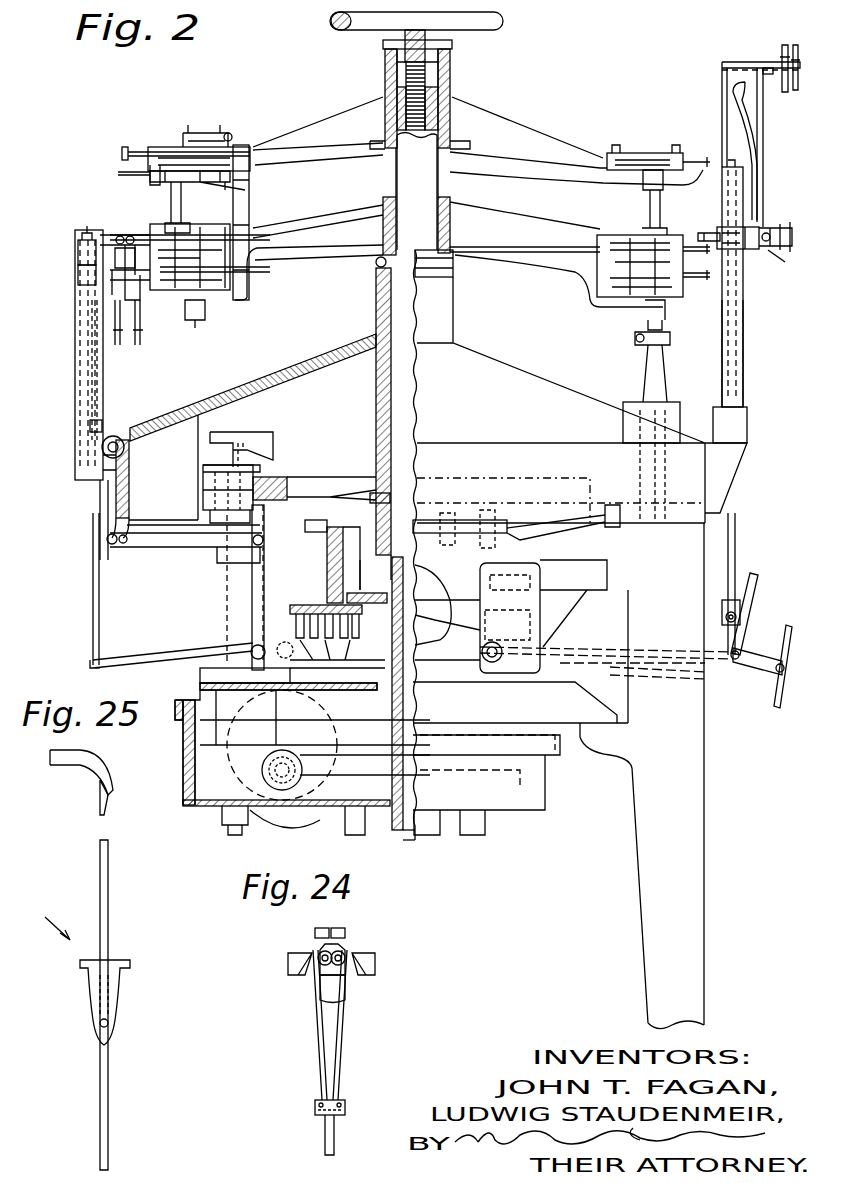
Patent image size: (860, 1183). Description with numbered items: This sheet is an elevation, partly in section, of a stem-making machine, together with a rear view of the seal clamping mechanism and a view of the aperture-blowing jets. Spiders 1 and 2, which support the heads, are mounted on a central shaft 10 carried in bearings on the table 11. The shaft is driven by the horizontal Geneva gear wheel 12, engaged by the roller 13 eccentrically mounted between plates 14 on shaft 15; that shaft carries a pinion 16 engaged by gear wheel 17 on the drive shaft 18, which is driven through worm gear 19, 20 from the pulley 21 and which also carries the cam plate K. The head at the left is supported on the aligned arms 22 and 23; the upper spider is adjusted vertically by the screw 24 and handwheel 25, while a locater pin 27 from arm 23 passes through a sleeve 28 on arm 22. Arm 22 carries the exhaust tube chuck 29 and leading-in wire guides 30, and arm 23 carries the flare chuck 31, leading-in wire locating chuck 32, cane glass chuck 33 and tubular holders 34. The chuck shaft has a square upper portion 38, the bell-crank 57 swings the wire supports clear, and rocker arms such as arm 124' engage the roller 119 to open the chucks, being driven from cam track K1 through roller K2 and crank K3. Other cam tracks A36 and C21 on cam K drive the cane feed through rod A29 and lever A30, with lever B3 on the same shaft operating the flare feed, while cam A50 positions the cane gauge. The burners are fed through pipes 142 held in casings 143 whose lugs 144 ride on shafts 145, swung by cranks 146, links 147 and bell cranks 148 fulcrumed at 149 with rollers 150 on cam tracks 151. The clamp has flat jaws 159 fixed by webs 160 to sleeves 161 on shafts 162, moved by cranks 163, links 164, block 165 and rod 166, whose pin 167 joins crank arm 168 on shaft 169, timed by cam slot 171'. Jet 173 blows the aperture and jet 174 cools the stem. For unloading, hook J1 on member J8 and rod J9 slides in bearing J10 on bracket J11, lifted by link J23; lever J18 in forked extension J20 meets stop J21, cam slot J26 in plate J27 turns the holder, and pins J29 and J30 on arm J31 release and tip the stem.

In FIG. 2, the upper spider 1 is at (447, 113).
In FIG. 2, the lower spider 2 is at (452, 207).
In FIG. 2, the central shaft 10 is at (400, 176).
In FIG. 2, the table 11 is at (333, 354).
In FIG. 2, the gear wheel 12 is at (300, 481).
In FIG. 2, the roller 13 is at (203, 487).
In FIG. 2, the plates 14 is at (262, 482).
In FIG. 2, the shaft 15 is at (232, 594).
In FIG. 2, the pinion 16 is at (266, 740).
In FIG. 2, the gear wheel 17 is at (335, 726).
In FIG. 2, the drive shaft 18 is at (406, 832).
In FIG. 2, the worm gear 19 is at (358, 771).
In FIG. 2, the worm gear 20 is at (262, 775).
In FIG. 2, the pulley 21 is at (306, 812).
In FIG. 2, the upper arm 22 is at (316, 130).
In FIG. 2, the lower arm 23 is at (328, 217).
In FIG. 2, the screw 24 is at (405, 78).
In FIG. 2, the handwheel 25 is at (352, 32).
In FIG. 2, the locater pin 27 is at (250, 202).
In FIG. 2, the sleeve 28 is at (250, 148).
In FIG. 2, the exhaust tube chuck 29 is at (124, 146).
In FIG. 2, the leading-in wire guides 30 is at (118, 173).
In FIG. 2, the flare chuck 31 is at (136, 235).
In FIG. 2, the leading-in wire locating chuck 32 is at (125, 237).
In FIG. 2, the cane glass chuck 33 is at (118, 273).
In FIG. 2, the tubular holders 34 is at (135, 345).
In FIG. 2, the upper portion of shaft 38 is at (184, 203).
In FIG. 2, the bell-crank 57 is at (203, 140).
In FIG. 2, the roller 119 is at (203, 318).
In FIG. 2, the rocker arm 124' is at (653, 355).
In FIG. 2, the vertical pipe 142 is at (78, 252).
In FIG. 2, the casing 143 is at (75, 340).
In FIG. 2, the lug 144 is at (118, 438).
In FIG. 2, the shaft 145 is at (125, 445).
In FIG. 2, the crank 146 is at (105, 500).
In FIG. 2, the link 147 is at (163, 548).
In FIG. 2, the bell crank 148 is at (270, 592).
In FIG. 2, the fulcrum 149 is at (250, 646).
In FIG. 2, the roller 150 is at (425, 628).
In FIG. 2, the cam tracks 151 is at (322, 660).
In FIG. 2, the flat jaws 159 is at (121, 235).
In FIG. 24, the flat jaws 159 is at (327, 930).
In FIG. 2, the web 160 is at (118, 266).
In FIG. 24, the web 160 is at (345, 945).
In FIG. 2, the sleeve 161 is at (78, 272).
In FIG. 24, the shaft 162 is at (348, 956).
In FIG. 24, the cranks 163 is at (318, 950).
In FIG. 2, the links 164 is at (97, 395).
In FIG. 24, the links 164 is at (318, 1026).
In FIG. 2, the block 165 is at (101, 422).
In FIG. 24, the block 165 is at (345, 1104).
In FIG. 24, the rod 166 is at (338, 1135).
In FIG. 2, the pin 167 is at (93, 588).
In FIG. 2, the crank arm 168 is at (166, 654).
In FIG. 2, the shaft 169 is at (280, 643).
In FIG. 2, the cam slot 171' is at (345, 626).
In FIG. 25, the jet 173 is at (108, 796).
In FIG. 25, the jet 174 is at (85, 1005).
In FIG. 2, the rod A29 is at (752, 592).
In FIG. 2, the lever A30 is at (587, 646).
In FIG. 2, the cam track A36 is at (290, 638).
In FIG. 2, the cam A50 is at (258, 441).
In FIG. 2, the lever B3 is at (736, 672).
In FIG. 2, the cam slot C21 is at (327, 553).
In FIG. 2, the cam plate K is at (362, 575).
In FIG. 2, the cam track K1 is at (306, 530).
In FIG. 2, the roller K2 is at (440, 535).
In FIG. 2, the crank K3 is at (570, 535).
In FIG. 2, the hook J1 is at (710, 237).
In FIG. 2, the upright cylindrical member J8 is at (722, 208).
In FIG. 2, the rod J9 is at (736, 550).
In FIG. 2, the bearing J10 is at (743, 346).
In FIG. 2, the bracket J11 is at (747, 428).
In FIG. 2, the lever J18 is at (778, 226).
In FIG. 2, the forked extension J20 is at (770, 220).
In FIG. 2, the adjustable stop J21 is at (770, 250).
In FIG. 2, the link J23 is at (740, 638).
In FIG. 2, the cam slot J26 is at (751, 108).
In FIG. 2, the plate J27 is at (760, 150).
In FIG. 2, the pin J29 is at (784, 45).
In FIG. 2, the pin J30 is at (796, 45).
In FIG. 2, the arm J31 is at (770, 74).